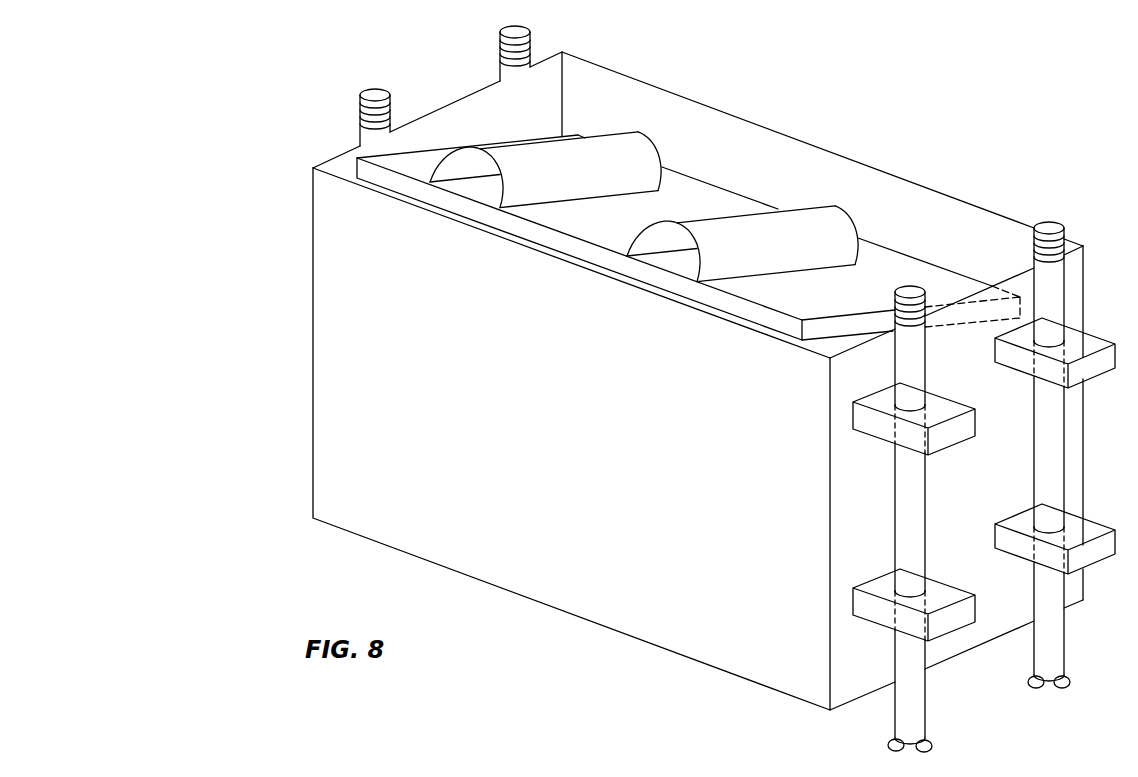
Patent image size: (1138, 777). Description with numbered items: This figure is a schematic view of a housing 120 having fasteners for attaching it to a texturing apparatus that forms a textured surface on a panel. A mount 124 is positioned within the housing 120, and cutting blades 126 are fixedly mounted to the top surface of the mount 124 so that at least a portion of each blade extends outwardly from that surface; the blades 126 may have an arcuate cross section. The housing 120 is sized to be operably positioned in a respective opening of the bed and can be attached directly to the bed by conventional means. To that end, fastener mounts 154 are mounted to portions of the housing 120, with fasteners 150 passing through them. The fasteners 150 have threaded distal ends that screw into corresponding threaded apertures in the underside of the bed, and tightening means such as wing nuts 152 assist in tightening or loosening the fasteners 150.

The housing 120 is at (312, 317).
The mount 124 is at (902, 277).
The cutting blade 126 is at (724, 217).
The fastener 150 is at (915, 495).
The wing nut 152 is at (928, 743).
The fastener mount 154 is at (935, 407).